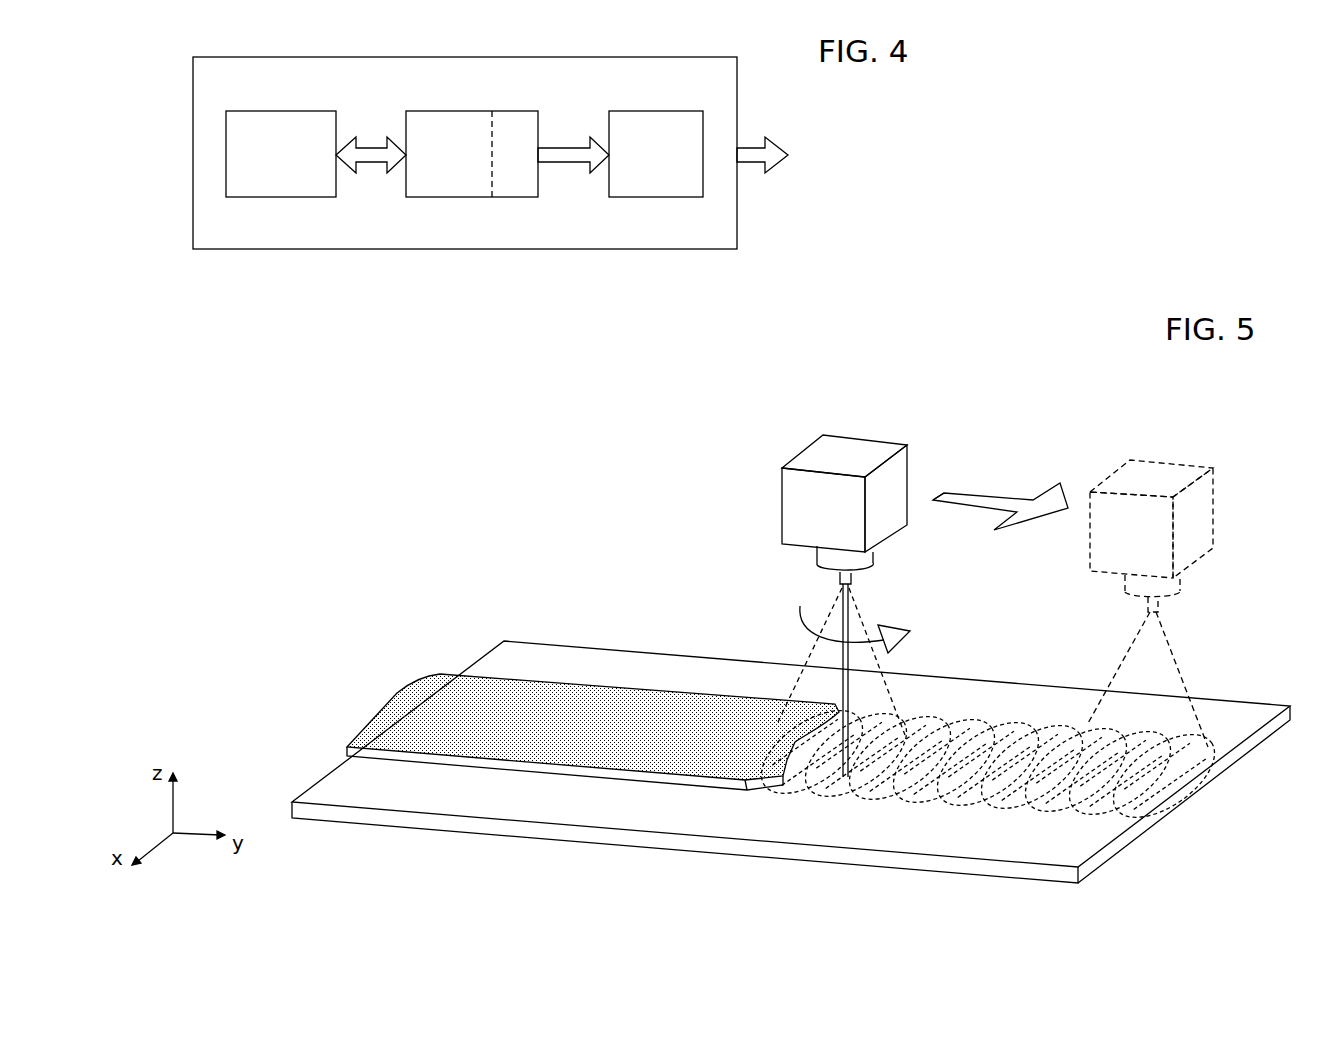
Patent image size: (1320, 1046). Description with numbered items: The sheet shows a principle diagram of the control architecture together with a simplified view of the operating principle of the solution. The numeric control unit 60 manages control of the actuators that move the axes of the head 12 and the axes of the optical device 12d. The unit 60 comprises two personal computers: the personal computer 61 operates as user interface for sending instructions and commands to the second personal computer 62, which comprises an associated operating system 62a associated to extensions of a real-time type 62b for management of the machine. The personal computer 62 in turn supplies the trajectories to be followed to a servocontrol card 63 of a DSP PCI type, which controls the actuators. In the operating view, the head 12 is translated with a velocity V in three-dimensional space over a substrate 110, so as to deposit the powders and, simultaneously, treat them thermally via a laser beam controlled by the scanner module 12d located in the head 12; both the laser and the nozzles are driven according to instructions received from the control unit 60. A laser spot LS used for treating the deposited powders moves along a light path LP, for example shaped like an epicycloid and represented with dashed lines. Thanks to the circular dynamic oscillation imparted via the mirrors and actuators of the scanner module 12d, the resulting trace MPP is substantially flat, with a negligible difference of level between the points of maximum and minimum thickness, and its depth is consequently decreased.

In FIG. 4, the numeric control unit 60 is at (312, 250).
In FIG. 4, the personal computer 61 is at (274, 110).
In FIG. 4, the second personal computer 62 is at (474, 110).
In FIG. 4, the operating system 62a is at (454, 183).
In FIG. 4, the real-time type extensions 62b is at (512, 185).
In FIG. 4, the servocontrol card 63 is at (673, 110).
In FIG. 5, the head 12 is at (798, 487).
In FIG. 5, the scanner module 12d is at (800, 501).
In FIG. 5, the substrate 110 is at (1083, 838).
In FIG. 5, the trace MPP is at (425, 710).
In FIG. 5, the light path LP is at (960, 727).
In FIG. 5, the laser spot LS is at (846, 780).
In FIG. 5, the velocity V is at (993, 498).